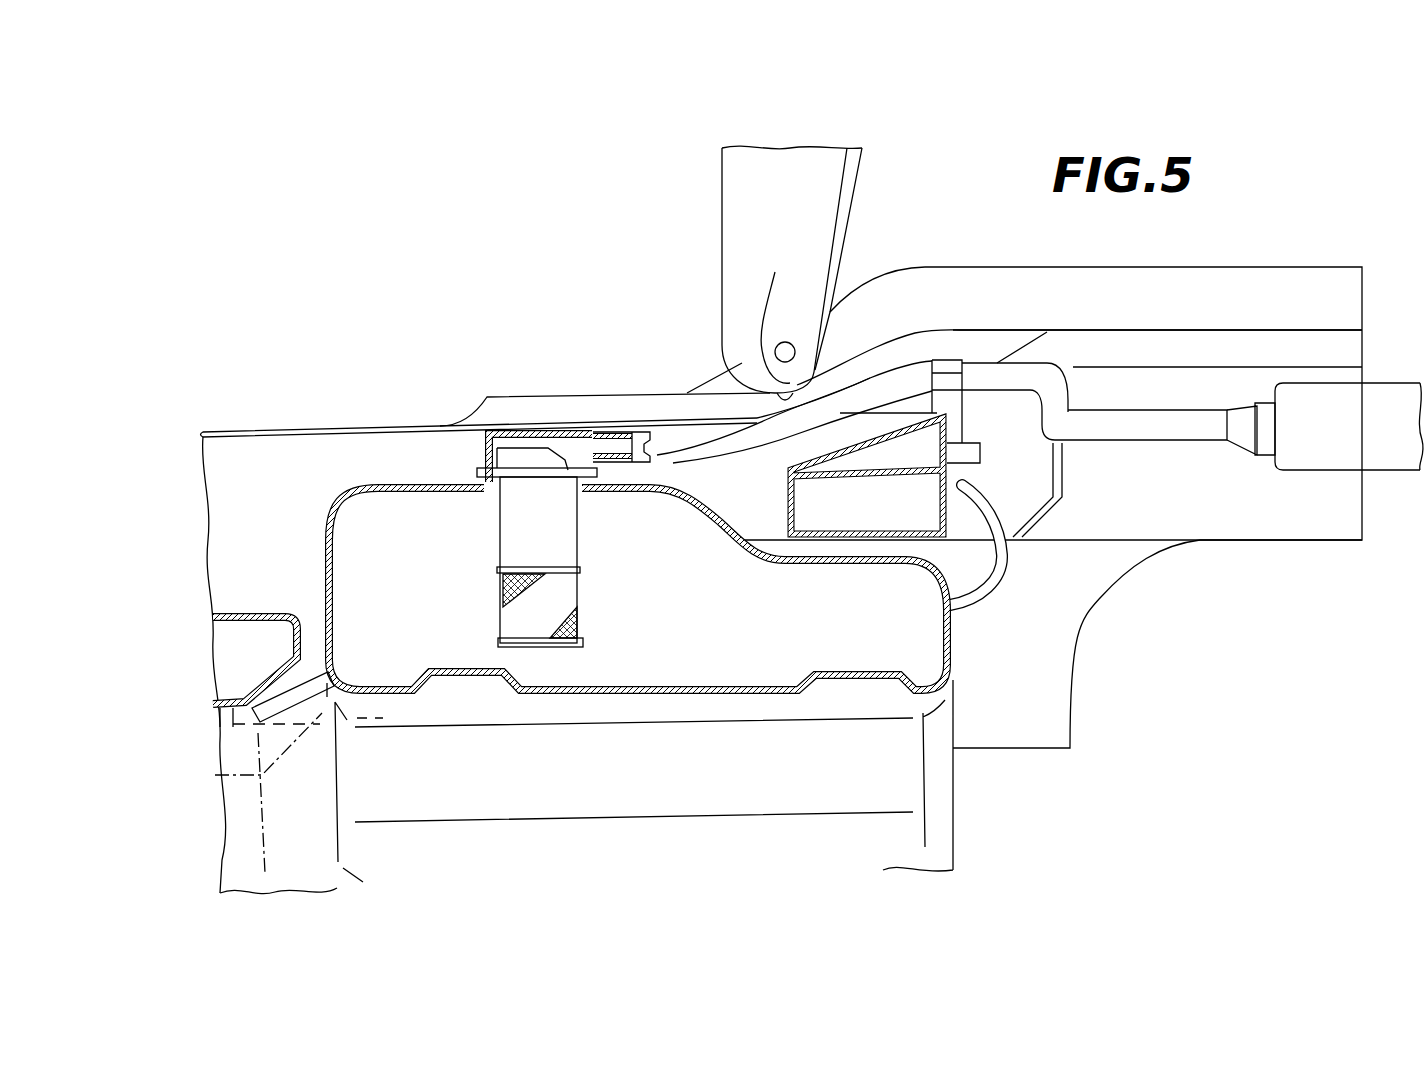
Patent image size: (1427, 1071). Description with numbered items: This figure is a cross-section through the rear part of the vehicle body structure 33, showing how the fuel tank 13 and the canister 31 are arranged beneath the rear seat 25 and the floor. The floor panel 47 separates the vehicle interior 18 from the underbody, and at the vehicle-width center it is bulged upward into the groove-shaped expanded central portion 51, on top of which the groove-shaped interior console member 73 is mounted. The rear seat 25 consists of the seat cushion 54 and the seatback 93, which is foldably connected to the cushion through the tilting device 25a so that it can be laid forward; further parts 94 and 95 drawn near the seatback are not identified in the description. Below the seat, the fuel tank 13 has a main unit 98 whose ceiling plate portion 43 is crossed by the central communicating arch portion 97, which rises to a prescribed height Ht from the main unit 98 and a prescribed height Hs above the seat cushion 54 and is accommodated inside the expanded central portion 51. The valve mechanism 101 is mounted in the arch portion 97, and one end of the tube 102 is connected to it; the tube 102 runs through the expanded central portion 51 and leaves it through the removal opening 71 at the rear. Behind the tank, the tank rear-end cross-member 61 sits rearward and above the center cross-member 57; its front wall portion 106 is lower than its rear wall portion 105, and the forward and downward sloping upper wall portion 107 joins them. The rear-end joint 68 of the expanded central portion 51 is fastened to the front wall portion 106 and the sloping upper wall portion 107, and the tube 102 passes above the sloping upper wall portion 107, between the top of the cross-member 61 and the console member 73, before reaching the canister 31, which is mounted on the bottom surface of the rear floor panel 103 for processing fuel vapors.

The fuel tank 13 is at (345, 458).
The vehicle interior 18 is at (377, 141).
The rear seat 25 is at (689, 163).
The tilting device 25a is at (835, 145).
The canister 31 is at (1395, 368).
The vehicle body structure 33 is at (657, 388).
The ceiling plate portion 43 is at (448, 487).
The floor panel 47 is at (215, 430).
The expanded central portion 51 is at (382, 400).
The seat cushion 54 is at (378, 413).
The center cross-member 57 is at (245, 618).
The tank rear-end cross-member 61 is at (883, 412).
The rear-end joint 68 is at (770, 470).
The removal opening 71 is at (467, 427).
The groove-shaped interior console member 73 is at (583, 393).
The seatback 93 is at (808, 145).
The pedal foot 94 is at (743, 367).
The pivot hole 95 is at (775, 342).
The central communicating arch portion 97 is at (430, 487).
The main unit 98 is at (222, 690).
The valve mechanism 101 is at (482, 433).
The tube 102 is at (713, 425).
The rear floor panel 103 is at (1307, 355).
The rear wall portion 105 is at (960, 463).
The front wall portion 106 is at (790, 497).
The forward and downward sloping upper wall portion 107 is at (838, 420).